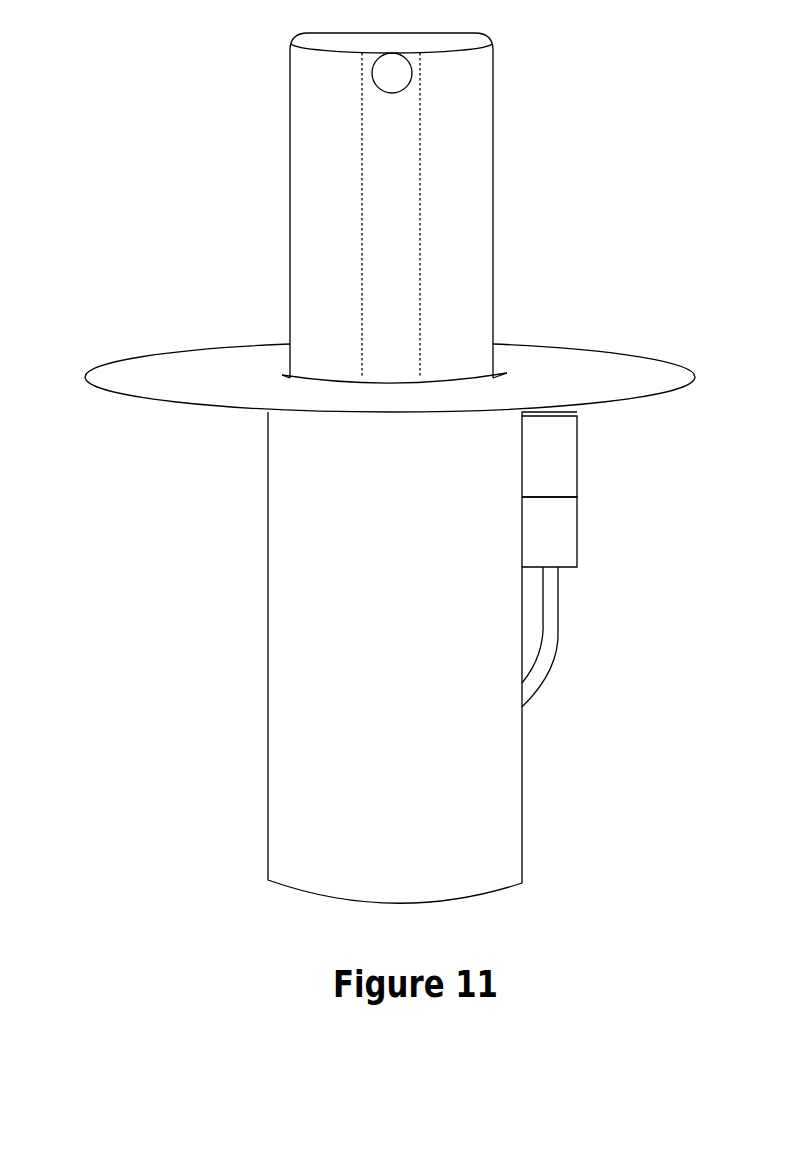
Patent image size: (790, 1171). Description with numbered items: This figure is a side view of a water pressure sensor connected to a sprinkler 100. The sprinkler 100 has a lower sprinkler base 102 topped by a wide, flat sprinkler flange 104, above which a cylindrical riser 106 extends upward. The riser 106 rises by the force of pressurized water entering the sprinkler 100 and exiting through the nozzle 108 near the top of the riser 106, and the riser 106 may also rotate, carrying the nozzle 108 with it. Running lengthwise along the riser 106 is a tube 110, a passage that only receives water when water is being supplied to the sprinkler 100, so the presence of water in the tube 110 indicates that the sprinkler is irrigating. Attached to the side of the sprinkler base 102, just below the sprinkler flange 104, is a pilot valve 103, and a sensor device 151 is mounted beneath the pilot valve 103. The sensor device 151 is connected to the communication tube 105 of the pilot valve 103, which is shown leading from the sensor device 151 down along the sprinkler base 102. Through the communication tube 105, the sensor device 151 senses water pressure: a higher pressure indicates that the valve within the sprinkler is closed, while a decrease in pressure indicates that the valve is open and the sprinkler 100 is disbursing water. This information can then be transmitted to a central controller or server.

The sprinkler 100 is at (155, 508).
The sprinkler base 102 is at (500, 773).
The pilot valve 103 is at (545, 453).
The sprinkler flange 104 is at (183, 392).
The communication tube 105 is at (547, 630).
The riser 106 is at (312, 297).
The nozzle 108 is at (376, 85).
The tube 110 is at (420, 220).
The sensor device 151 is at (563, 545).